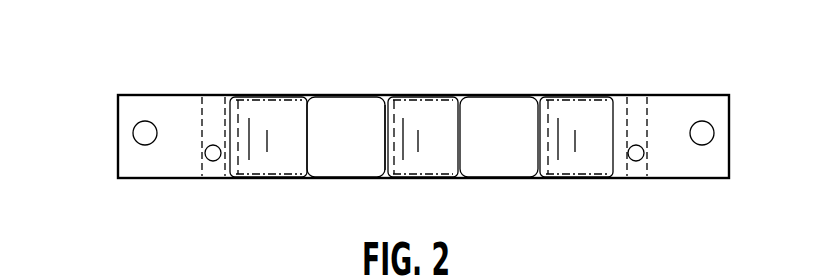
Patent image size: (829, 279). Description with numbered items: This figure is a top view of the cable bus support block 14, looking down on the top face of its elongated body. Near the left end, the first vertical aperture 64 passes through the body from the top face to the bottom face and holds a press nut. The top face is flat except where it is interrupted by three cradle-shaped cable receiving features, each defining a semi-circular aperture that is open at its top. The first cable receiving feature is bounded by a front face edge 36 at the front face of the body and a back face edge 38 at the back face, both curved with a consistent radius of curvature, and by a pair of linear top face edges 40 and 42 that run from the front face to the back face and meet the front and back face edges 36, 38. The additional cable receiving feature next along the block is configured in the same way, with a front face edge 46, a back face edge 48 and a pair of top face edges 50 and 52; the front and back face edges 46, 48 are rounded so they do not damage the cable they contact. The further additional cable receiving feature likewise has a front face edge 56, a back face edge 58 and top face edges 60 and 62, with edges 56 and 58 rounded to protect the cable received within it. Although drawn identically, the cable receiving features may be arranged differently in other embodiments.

The cable bus support block 14 is at (82, 110).
The front face edge 36 is at (285, 180).
The back face edge 38 is at (278, 95).
The top face edge 40 is at (222, 108).
The top face edge 42 is at (307, 143).
The front face edge 46 is at (426, 180).
The back face edge 48 is at (397, 100).
The top face edge 50 is at (385, 165).
The top face edge 52 is at (460, 157).
The front face edge 56 is at (583, 180).
The back face edge 58 is at (590, 95).
The top face edge 60 is at (548, 110).
The top face edge 62 is at (628, 105).
The first vertical aperture 64 is at (137, 140).